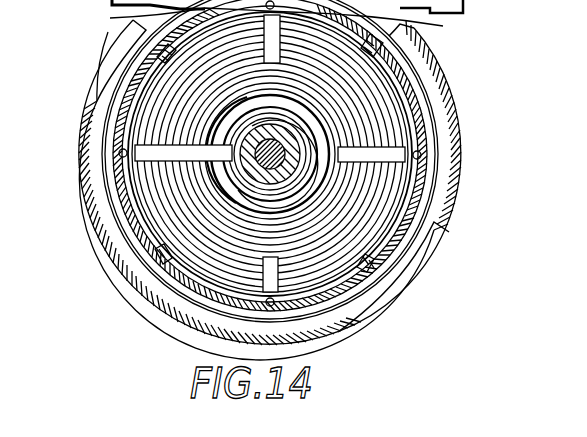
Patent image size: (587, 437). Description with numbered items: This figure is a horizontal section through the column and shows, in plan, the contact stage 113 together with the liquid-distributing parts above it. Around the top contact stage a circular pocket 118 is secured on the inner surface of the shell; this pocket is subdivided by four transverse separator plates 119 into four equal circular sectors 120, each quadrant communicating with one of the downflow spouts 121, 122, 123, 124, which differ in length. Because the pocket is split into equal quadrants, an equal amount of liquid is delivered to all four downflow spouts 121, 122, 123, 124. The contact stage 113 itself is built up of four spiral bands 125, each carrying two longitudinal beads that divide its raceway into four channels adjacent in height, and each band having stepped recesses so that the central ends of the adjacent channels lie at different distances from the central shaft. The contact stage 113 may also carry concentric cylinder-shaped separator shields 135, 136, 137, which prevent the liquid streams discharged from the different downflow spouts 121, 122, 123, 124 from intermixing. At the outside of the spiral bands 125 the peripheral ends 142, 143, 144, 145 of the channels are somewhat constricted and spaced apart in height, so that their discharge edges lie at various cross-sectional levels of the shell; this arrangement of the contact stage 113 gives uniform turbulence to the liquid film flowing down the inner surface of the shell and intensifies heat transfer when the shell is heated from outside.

The contact stage 113 is at (412, 127).
The circular pocket 118 is at (398, 223).
The transverse separator plates 119 is at (150, 287).
The circular sectors 120 is at (200, 287).
The downflow spout 121 is at (430, 173).
The downflow spout 122 is at (347, 330).
The downflow spout 123 is at (177, 183).
The downflow spout 124 is at (132, 19).
The spiral bands 125 is at (150, 100).
The separator shield 135 is at (168, 250).
The separator shield 136 is at (119, 152).
The separator shield 137 is at (150, 200).
The peripheral end 142 is at (393, 295).
The peripheral end 143 is at (170, 252).
The peripheral end 144 is at (158, 68).
The peripheral end 145 is at (395, 26).